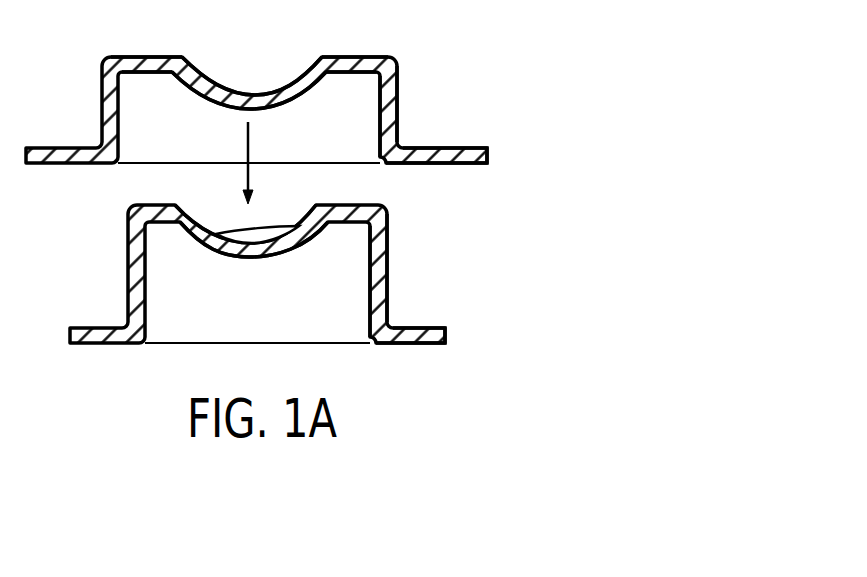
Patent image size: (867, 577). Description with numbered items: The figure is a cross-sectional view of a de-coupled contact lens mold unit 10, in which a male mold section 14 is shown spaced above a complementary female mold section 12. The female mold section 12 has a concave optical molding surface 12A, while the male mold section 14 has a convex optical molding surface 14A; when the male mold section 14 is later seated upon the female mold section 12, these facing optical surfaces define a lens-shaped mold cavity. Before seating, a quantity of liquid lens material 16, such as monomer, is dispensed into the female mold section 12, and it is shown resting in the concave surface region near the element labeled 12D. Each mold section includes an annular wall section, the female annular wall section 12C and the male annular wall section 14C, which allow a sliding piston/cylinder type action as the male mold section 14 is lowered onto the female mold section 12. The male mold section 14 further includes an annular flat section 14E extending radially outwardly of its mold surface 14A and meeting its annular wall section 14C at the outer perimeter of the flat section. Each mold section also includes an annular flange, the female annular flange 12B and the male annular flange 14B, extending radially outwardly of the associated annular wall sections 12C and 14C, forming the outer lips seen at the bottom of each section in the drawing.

The contact lens mold unit 10 is at (487, 91).
The female mold section 12 is at (380, 300).
The concave optical molding surface 12A is at (298, 226).
The annular flange 12B is at (436, 328).
The annular wall section 12C is at (388, 250).
The dome protrusion of base 12D is at (297, 248).
The male mold section 14 is at (396, 97).
The convex optical molding surface 14A is at (298, 97).
The annular flange 14B is at (477, 148).
The annular wall section 14C is at (395, 130).
The annular flat section 14E is at (365, 64).
The liquid lens material 16 is at (237, 231).